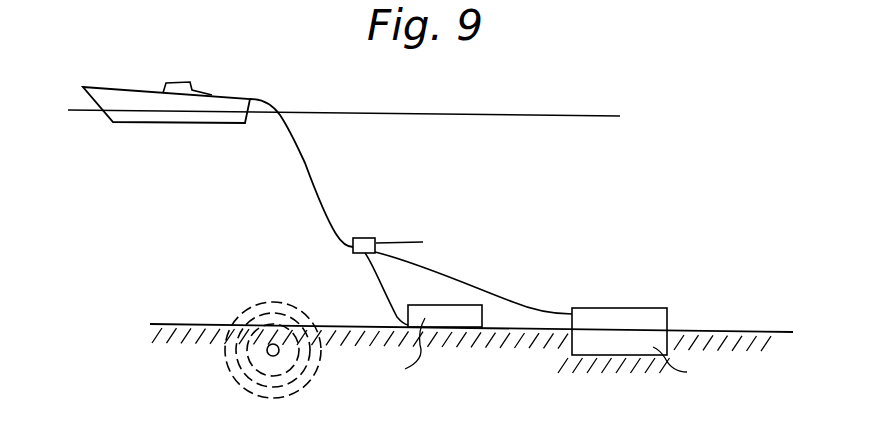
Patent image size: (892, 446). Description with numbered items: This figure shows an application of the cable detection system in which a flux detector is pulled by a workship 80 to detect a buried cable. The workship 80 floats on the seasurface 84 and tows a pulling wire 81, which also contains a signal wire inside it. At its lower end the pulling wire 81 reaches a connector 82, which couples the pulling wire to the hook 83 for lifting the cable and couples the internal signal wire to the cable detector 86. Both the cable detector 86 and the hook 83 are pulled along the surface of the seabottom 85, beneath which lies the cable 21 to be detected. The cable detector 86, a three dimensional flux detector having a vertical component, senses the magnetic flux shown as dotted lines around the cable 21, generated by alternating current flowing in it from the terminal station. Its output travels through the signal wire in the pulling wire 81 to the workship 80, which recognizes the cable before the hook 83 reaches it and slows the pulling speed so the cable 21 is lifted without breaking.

The cable 21 is at (280, 356).
The workship 80 is at (190, 82).
The pulling wire 81 is at (317, 187).
The connector 82 is at (376, 243).
The hook 83 is at (662, 307).
The seasurface 84 is at (573, 116).
The surface of the seabottom 85 is at (750, 330).
The cable detector 86 is at (457, 318).